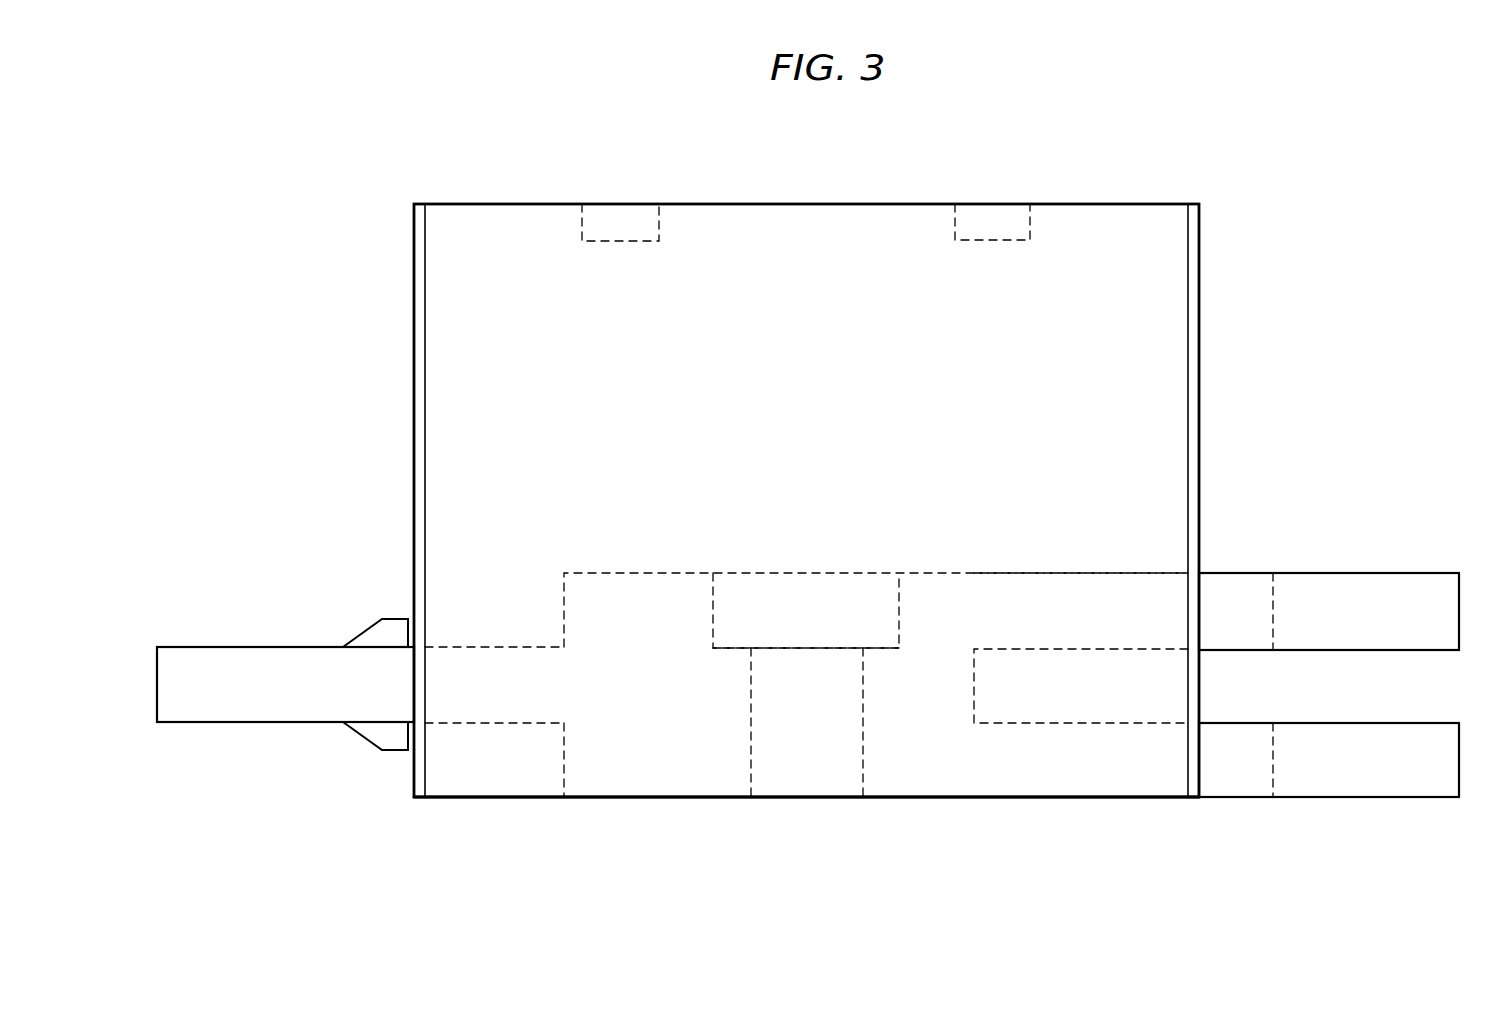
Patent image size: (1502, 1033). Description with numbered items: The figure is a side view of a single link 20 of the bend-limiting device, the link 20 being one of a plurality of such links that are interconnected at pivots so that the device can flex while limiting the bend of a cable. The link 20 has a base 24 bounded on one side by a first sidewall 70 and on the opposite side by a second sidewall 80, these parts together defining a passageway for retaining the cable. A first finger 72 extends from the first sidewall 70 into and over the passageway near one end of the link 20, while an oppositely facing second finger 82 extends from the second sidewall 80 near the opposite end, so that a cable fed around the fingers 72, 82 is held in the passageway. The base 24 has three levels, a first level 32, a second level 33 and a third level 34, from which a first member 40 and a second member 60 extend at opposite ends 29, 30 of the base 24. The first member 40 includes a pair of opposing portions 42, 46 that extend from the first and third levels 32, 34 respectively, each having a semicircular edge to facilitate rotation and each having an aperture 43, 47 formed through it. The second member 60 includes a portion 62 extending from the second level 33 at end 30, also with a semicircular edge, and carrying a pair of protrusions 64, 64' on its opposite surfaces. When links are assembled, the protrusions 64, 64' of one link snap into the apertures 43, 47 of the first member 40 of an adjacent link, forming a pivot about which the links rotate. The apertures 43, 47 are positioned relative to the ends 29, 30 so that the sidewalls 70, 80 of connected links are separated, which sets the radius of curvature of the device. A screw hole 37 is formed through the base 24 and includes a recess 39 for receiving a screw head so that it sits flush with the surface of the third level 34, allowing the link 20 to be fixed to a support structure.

The link 20 is at (420, 143).
The base 24 is at (576, 770).
The end of base 29 is at (988, 646).
The end of base 30 is at (563, 571).
The first level 32 is at (1096, 782).
The second level 33 is at (468, 712).
The third level 34 is at (1059, 586).
The screw hole 37 is at (853, 756).
The recess 39 is at (748, 640).
The first member 40 is at (1420, 530).
The opposing portion 42 is at (1358, 574).
The aperture 43 is at (1233, 586).
The opposing portion 46 is at (1342, 800).
The aperture 47 is at (1238, 784).
The second member 60 is at (232, 604).
The portion 62 is at (233, 712).
The protrusion 64 is at (375, 609).
The protrusion 64' is at (375, 761).
The first sidewall 70 is at (456, 422).
The first finger 72 is at (614, 212).
The second sidewall 80 is at (1155, 326).
The second finger 82 is at (986, 212).